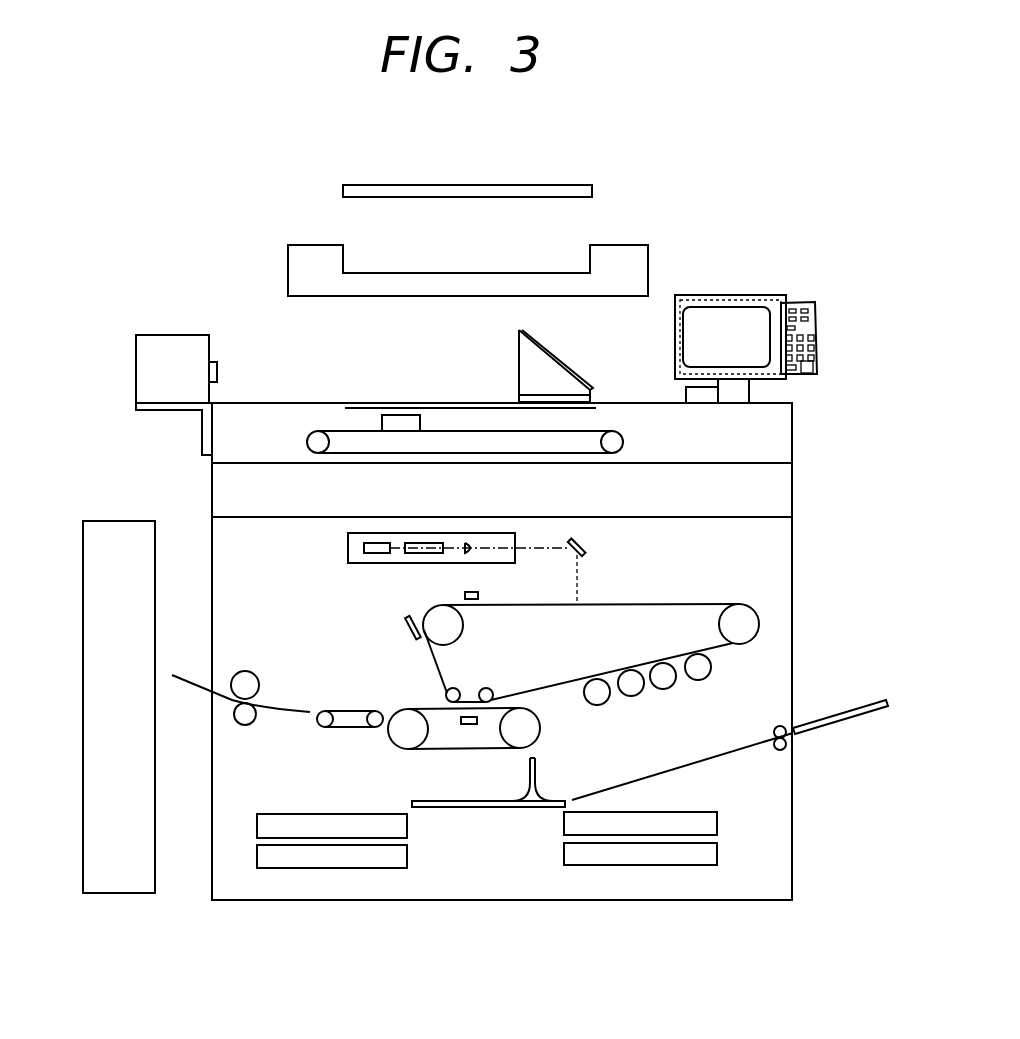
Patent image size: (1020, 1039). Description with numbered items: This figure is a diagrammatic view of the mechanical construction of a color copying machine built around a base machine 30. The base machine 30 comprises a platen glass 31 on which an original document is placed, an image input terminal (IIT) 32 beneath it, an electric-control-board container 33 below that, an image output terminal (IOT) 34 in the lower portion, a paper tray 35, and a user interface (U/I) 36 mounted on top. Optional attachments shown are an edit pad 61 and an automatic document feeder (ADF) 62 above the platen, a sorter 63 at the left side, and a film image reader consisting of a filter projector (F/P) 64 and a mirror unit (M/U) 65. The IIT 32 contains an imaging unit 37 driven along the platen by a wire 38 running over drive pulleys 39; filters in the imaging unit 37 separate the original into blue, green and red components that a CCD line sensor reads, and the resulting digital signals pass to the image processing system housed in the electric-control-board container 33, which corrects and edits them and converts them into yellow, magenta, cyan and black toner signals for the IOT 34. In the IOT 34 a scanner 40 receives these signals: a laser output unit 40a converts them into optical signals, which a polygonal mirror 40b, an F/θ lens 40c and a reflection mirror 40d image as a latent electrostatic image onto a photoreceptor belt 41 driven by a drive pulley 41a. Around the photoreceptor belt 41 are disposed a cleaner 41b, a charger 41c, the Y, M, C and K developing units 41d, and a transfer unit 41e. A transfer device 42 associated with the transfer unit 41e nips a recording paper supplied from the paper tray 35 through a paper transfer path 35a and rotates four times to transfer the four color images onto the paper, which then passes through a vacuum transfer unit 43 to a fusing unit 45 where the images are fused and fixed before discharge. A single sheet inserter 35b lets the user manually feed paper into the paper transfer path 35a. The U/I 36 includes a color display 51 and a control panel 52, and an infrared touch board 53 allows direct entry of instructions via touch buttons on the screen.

The base machine 30 is at (338, 912).
The platen glass 31 is at (438, 405).
The image input terminal (IIT) 32 is at (762, 434).
The electric-control-board container 33 is at (752, 494).
The image output terminal (IOT) 34 is at (724, 591).
The paper tray 35 is at (545, 834).
The paper transfer path 35a is at (540, 774).
The single sheet inserter (SSI) 35b is at (838, 724).
The user interface (U/I) 36 is at (773, 308).
The imaging unit 37 is at (397, 418).
The wire 38 is at (338, 430).
The drive pulleys 39 is at (613, 440).
The scanner 40 is at (461, 567).
The laser output unit 40a is at (372, 555).
The polygonal mirror 40b is at (410, 555).
The F/θ lens 40c is at (474, 550).
The reflection mirror 40d is at (587, 547).
The photoreceptor belt 41 is at (548, 663).
The drive pulley 41a is at (455, 634).
The cleaner 41b is at (404, 632).
The charger 41c is at (478, 595).
The developing units 41d is at (716, 714).
The transfer unit 41e is at (468, 725).
The transfer device 42 is at (454, 754).
The vacuum transfer unit 43 is at (335, 740).
The fusing unit 45 is at (246, 662).
The color display 51 is at (752, 318).
The control panel 52 is at (812, 330).
The infrared touch board 53 is at (688, 295).
The edit pad 61 is at (568, 185).
The automatic document feeder (ADF) 62 is at (630, 245).
The sorter 63 is at (98, 785).
The filter projector (F/P) 64 is at (188, 335).
The mirror unit (M/U) 65 is at (542, 368).